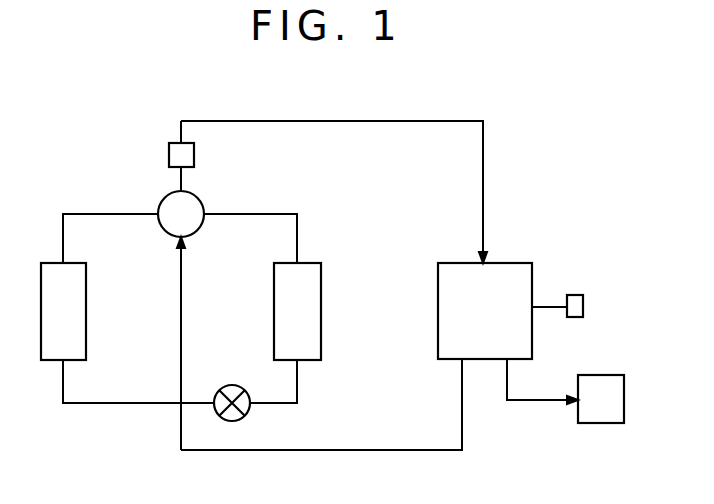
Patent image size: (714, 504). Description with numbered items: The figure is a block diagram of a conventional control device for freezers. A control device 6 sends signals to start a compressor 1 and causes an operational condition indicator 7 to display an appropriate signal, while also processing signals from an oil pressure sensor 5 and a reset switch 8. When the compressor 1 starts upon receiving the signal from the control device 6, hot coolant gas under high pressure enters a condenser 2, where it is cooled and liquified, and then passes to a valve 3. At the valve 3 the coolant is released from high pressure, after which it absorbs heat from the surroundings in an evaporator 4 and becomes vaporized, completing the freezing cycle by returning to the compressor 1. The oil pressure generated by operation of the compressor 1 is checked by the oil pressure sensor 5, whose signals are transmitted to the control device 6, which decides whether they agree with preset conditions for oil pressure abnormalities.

The compressor 1 is at (197, 205).
The condenser 2 is at (80, 307).
The valve 3 is at (245, 413).
The evaporator 4 is at (315, 281).
The oil pressure sensor 5 is at (194, 154).
The control device 6 is at (520, 272).
The operational condition indicator 7 is at (622, 383).
The reset switch 8 is at (583, 297).